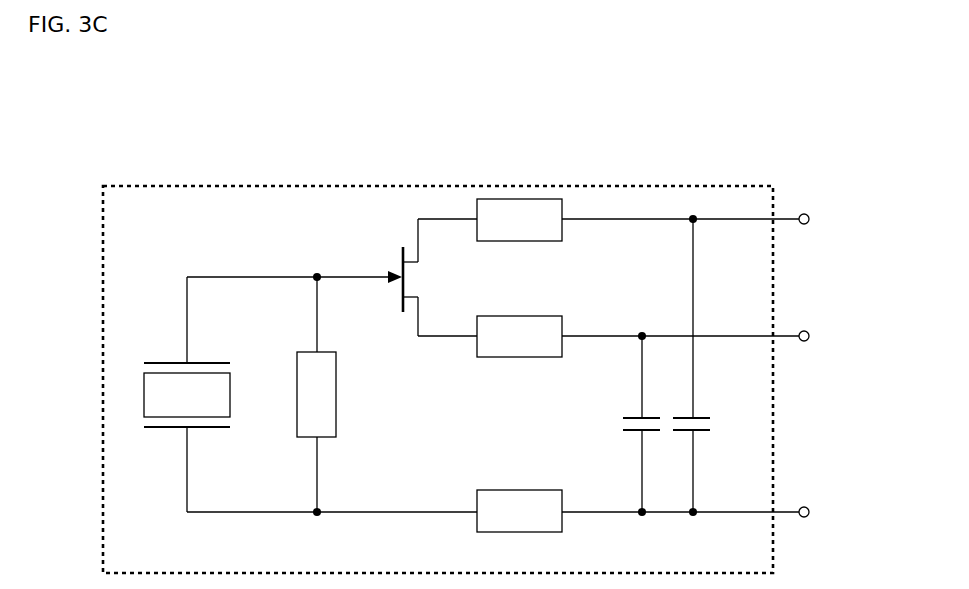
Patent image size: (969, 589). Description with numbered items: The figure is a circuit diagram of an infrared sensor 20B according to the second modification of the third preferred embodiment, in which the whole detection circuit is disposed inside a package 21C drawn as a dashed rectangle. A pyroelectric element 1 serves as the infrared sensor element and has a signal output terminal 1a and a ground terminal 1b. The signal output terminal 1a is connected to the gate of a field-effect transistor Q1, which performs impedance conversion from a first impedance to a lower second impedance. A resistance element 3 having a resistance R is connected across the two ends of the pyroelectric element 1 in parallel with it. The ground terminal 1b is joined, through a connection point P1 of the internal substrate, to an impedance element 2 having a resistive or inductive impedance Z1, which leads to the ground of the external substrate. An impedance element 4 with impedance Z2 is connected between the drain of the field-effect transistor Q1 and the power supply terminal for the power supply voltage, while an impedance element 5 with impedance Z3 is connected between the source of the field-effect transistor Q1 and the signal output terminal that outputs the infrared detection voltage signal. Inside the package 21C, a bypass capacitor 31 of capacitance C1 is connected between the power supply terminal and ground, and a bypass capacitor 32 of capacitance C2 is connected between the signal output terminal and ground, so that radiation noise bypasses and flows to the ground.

The infrared sensor 20B is at (482, 345).
The package 21C is at (265, 185).
The pyroelectric element 1 is at (202, 392).
The signal output terminal 1a is at (187, 362).
The ground terminal 1b is at (185, 427).
The impedance element 2 is at (519, 485).
The resistance element 3 is at (323, 365).
The impedance element 4 is at (519, 236).
The impedance element 5 is at (519, 321).
The bypass capacitor 31 is at (714, 365).
The bypass capacitor 32 is at (618, 424).
The connection point P1 is at (317, 516).
The field-effect transistor Q1 is at (403, 255).
The resistance R is at (325, 352).
The resistive or inductive impedance Z1 is at (518, 490).
The resistive or inductive impedance Z2 is at (493, 242).
The resistive or inductive impedance Z3 is at (540, 316).
The capacitance C1 is at (692, 417).
The capacitance C2 is at (642, 417).